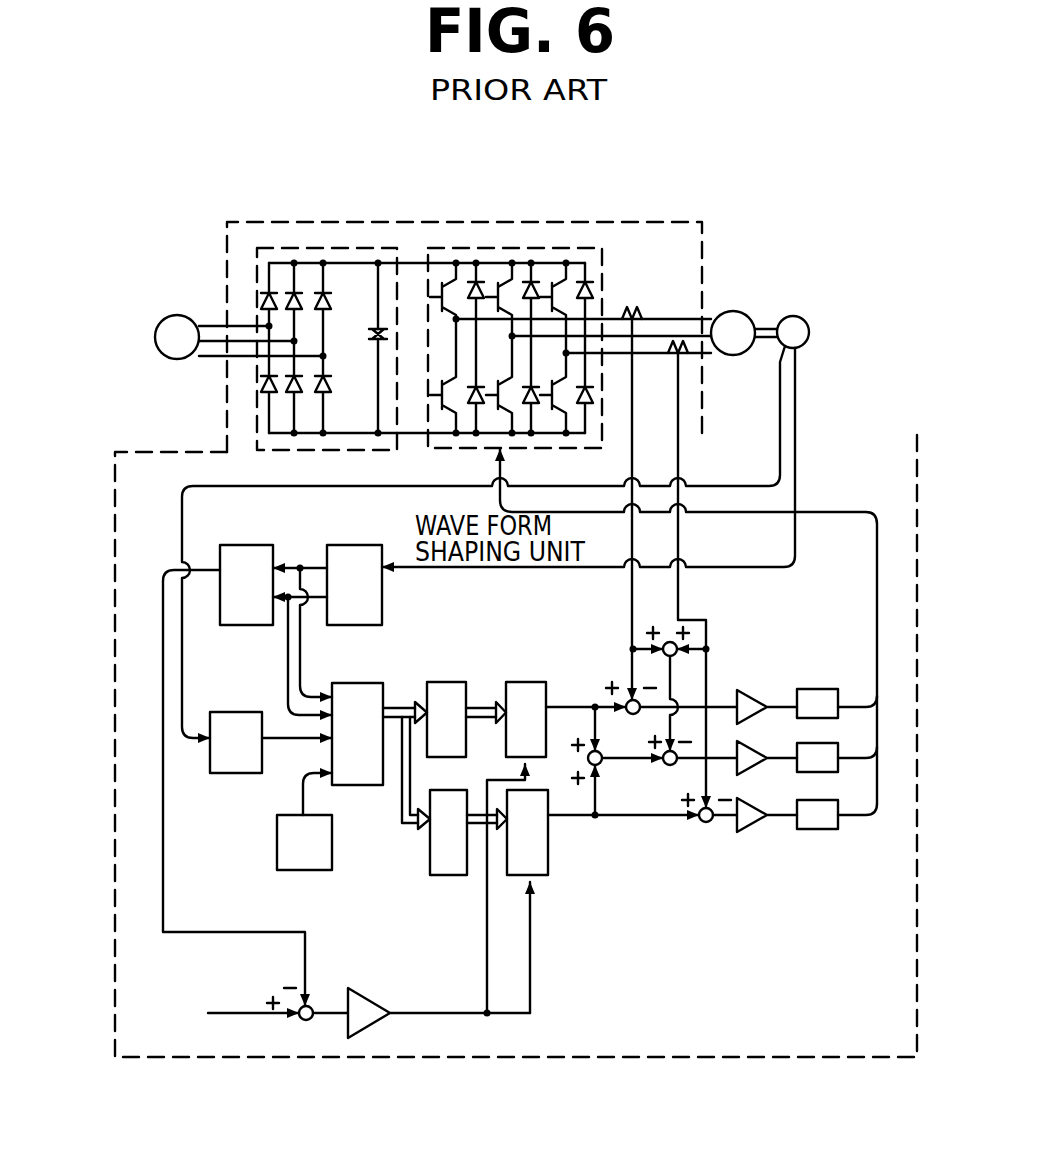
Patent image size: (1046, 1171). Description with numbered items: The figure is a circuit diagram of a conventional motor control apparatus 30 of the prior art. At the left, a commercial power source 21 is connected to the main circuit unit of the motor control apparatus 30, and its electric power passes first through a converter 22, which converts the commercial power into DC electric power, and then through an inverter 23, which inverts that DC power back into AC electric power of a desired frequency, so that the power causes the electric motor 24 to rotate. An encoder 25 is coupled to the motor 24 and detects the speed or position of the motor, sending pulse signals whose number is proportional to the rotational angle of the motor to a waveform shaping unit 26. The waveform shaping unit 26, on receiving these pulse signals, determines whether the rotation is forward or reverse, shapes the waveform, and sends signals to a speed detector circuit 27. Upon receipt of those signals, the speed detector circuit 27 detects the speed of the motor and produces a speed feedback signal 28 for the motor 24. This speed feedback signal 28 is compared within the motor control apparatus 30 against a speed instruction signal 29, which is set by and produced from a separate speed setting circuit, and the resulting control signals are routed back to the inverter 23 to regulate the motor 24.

The commercial power source 21 is at (179, 315).
The converter 22 is at (338, 248).
The inverter 23 is at (518, 248).
The electric motor 24 is at (733, 310).
The encoder 25 is at (795, 316).
The waveform shaping unit 26 is at (350, 545).
The speed detector circuit 27 is at (247, 545).
The speed feedback signal 28 is at (243, 932).
The speed instruction signal 29 is at (242, 1012).
The motor control apparatus 30 is at (678, 1060).